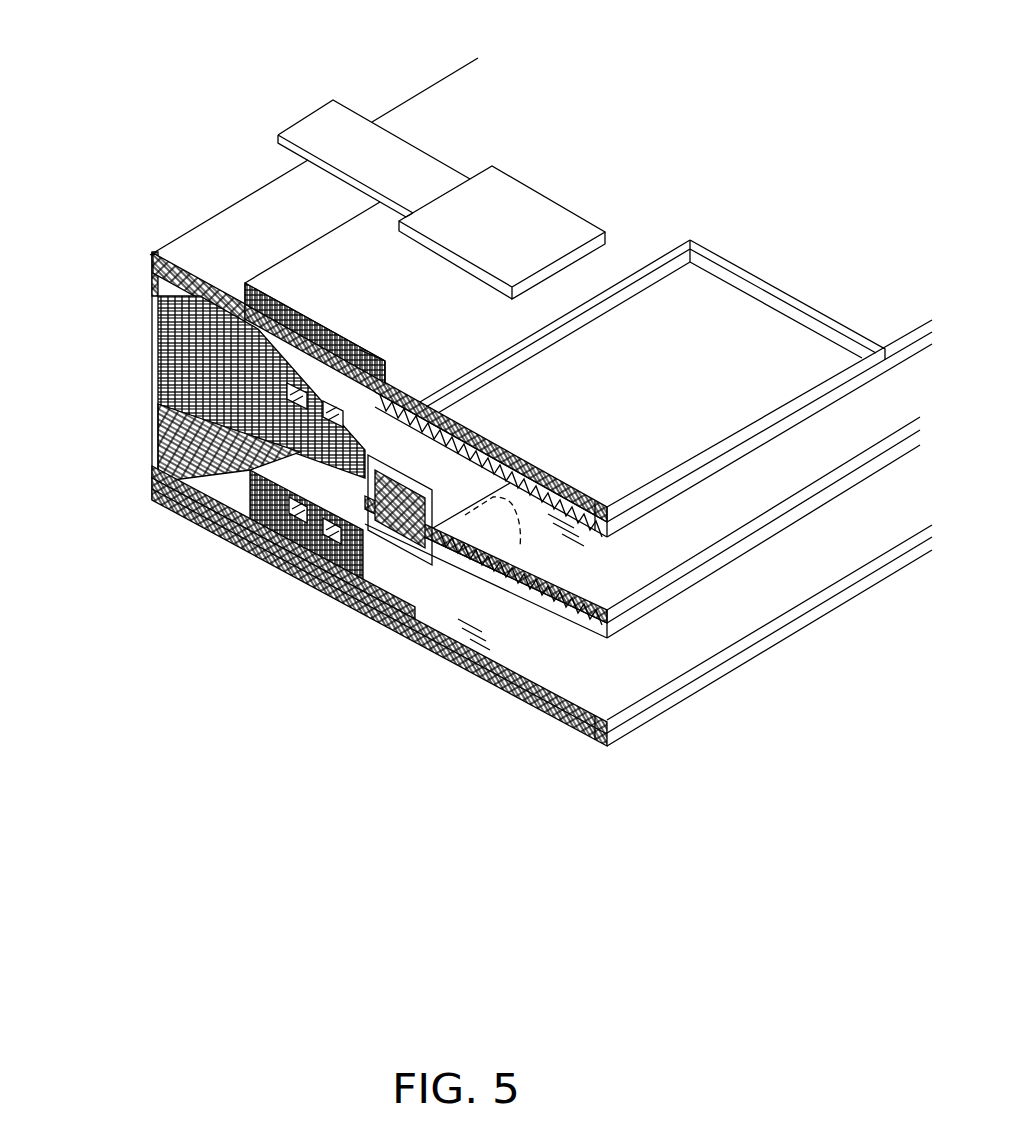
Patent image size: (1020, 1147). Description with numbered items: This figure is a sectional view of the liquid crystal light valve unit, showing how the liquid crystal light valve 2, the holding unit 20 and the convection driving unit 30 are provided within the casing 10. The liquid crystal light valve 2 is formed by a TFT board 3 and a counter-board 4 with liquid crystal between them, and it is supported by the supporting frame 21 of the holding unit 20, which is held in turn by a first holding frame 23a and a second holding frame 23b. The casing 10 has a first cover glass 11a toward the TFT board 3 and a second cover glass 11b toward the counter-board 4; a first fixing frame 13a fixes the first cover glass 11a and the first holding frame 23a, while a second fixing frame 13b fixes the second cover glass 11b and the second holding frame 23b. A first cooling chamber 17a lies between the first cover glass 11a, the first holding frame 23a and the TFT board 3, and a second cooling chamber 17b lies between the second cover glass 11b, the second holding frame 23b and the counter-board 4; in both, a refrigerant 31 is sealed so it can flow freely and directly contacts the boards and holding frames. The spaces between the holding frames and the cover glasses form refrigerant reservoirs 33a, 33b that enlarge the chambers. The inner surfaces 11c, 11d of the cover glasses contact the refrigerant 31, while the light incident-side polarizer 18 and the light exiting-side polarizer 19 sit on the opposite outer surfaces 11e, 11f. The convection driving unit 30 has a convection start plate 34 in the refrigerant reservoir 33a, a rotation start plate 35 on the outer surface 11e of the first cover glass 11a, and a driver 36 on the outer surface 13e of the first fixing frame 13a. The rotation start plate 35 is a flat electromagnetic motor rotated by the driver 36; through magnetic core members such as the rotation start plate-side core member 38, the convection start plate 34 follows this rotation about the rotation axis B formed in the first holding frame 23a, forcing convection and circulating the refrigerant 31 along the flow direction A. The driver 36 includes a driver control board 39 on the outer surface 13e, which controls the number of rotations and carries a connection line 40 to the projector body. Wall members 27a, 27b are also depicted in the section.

The liquid crystal light valve 2 is at (555, 632).
The TFT board 3 is at (733, 528).
The counter-board 4 is at (727, 560).
The casing 10 is at (240, 160).
The first cover glass 11a is at (738, 275).
The second cover glass 11b is at (598, 735).
The inner surface 11c is at (870, 392).
The inner surface 11d is at (862, 568).
The outer surface 11e is at (878, 347).
The outer surface 11f is at (840, 600).
The first fixing frame 13a is at (452, 95).
The second fixing frame 13b is at (152, 492).
The outer surface 13e is at (158, 252).
The first cooling chamber 17a is at (480, 495).
The second cooling chamber 17b is at (452, 604).
The light incident-side polarizer 18 is at (670, 285).
The light exiting-side polarizer 19 is at (645, 715).
The holding unit 20 is at (135, 375).
The supporting frame 21 is at (362, 567).
The first holding frame 23a is at (205, 300).
The second holding frame 23b is at (165, 500).
The upper wall member 27a is at (162, 322).
The lower wall member 27b is at (160, 405).
The convection driving unit 30 is at (283, 250).
The refrigerant 31 is at (575, 522).
The refrigerant reservoir 33a is at (392, 432).
The refrigerant reservoir 33b is at (373, 577).
The convection start plate 34 is at (380, 378).
The rotation start plate 35 is at (368, 360).
The driver 36 is at (533, 337).
The rotation start plate-side core member 38 is at (300, 375).
The driver control board 39 is at (571, 225).
The connection line 40 is at (305, 125).
The flow direction A is at (504, 532).
The rotation axis B is at (322, 360).